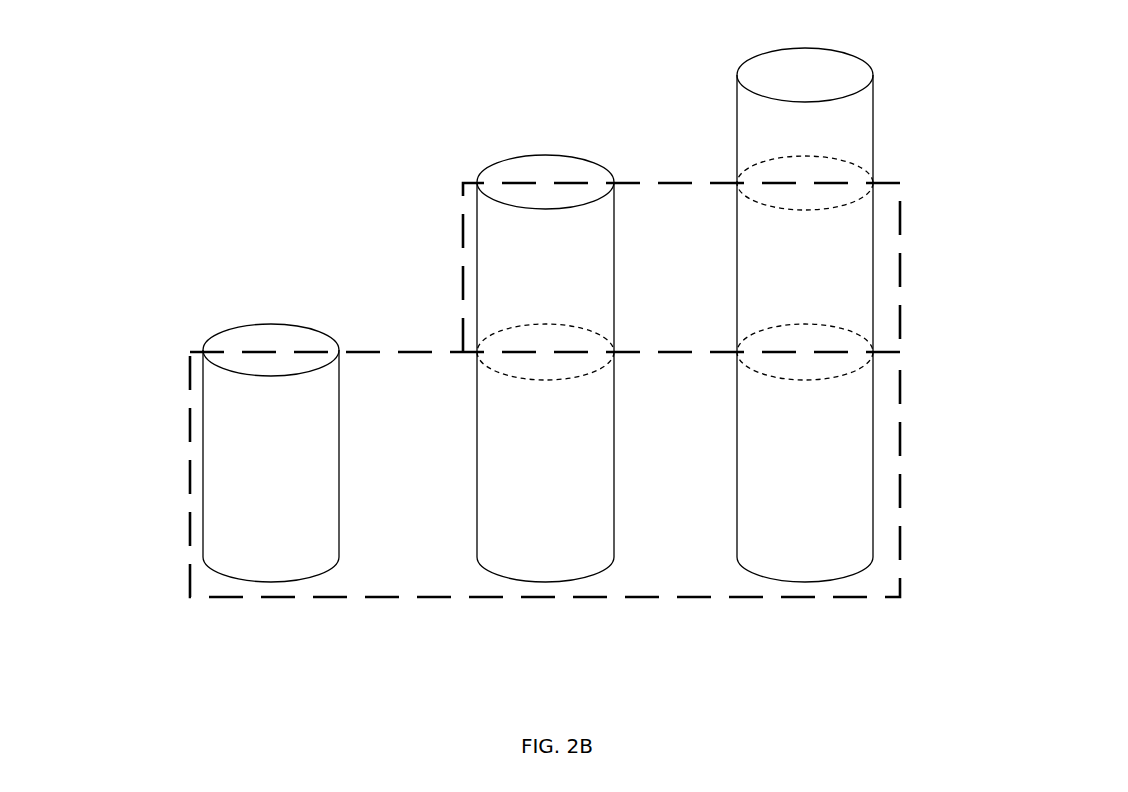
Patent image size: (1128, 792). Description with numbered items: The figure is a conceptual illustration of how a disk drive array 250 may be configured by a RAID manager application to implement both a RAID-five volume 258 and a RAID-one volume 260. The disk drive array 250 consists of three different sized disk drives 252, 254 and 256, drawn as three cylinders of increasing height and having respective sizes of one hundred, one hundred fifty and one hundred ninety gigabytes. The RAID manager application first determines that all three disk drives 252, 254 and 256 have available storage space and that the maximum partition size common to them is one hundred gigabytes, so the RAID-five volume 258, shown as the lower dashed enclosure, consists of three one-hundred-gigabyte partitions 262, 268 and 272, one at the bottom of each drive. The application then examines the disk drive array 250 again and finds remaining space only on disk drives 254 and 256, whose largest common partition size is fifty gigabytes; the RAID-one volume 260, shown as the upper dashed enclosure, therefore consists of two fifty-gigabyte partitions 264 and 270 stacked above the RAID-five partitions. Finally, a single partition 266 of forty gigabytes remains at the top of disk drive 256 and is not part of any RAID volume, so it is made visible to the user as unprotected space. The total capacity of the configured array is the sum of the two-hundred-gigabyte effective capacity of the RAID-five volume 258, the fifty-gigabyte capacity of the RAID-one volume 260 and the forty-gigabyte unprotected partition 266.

The disk drive array 250 is at (341, 161).
The disk drive 252 is at (223, 507).
The disk drive 254 is at (501, 426).
The disk drive 256 is at (810, 371).
The RAID 5 volume 258 is at (900, 397).
The RAID 1 volume 260 is at (900, 212).
The 100 GB partition 262 is at (203, 400).
The 50 GB partition 264 is at (477, 250).
The partition 266 is at (873, 75).
The 100 GB partition 268 is at (477, 412).
The 50 GB partition 270 is at (737, 270).
The 100 GB partition 272 is at (737, 412).